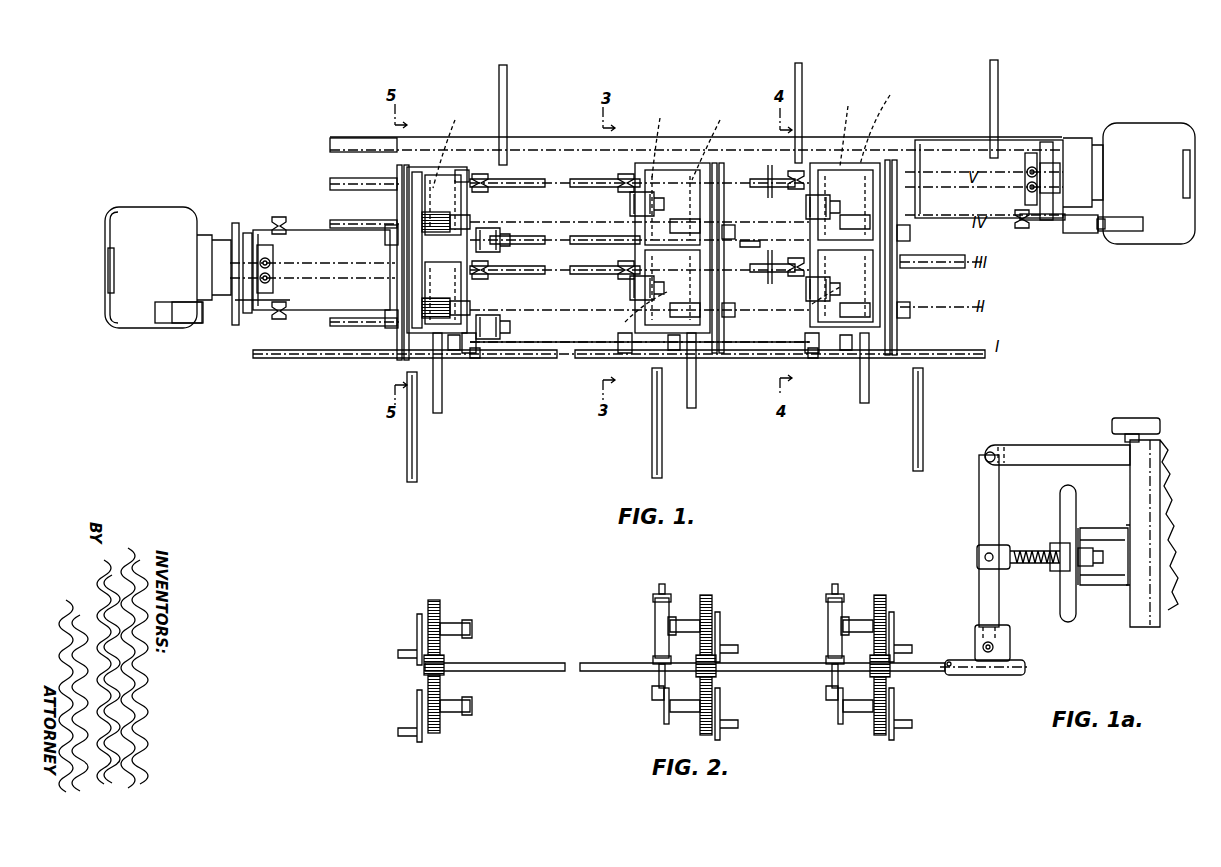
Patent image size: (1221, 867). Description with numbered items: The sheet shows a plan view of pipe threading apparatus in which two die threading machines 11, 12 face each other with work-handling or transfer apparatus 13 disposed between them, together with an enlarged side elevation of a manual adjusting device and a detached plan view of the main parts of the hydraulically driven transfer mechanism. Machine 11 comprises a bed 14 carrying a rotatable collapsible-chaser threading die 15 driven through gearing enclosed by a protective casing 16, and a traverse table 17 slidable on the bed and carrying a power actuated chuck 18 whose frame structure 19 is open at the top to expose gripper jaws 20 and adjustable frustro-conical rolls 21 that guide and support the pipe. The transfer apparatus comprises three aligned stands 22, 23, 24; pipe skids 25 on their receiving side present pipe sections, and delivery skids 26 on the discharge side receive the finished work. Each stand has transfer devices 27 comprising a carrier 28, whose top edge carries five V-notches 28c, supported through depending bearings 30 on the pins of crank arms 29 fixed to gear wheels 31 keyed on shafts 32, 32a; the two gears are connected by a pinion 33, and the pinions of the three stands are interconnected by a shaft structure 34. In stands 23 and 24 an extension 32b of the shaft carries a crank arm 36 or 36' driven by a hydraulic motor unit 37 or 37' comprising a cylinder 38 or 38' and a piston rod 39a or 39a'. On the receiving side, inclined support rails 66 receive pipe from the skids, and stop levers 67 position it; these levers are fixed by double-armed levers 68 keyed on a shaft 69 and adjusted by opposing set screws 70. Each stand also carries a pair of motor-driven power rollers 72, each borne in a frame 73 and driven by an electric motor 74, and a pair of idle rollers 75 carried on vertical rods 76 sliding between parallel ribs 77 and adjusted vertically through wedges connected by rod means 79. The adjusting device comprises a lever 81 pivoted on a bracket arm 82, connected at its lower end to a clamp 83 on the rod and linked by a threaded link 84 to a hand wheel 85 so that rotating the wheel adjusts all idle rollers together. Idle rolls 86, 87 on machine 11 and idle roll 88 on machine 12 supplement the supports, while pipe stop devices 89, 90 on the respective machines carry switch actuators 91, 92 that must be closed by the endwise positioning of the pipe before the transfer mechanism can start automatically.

In FIG. 1, the die threading machine 11 is at (240, 207).
In FIG. 1, the die threading machine 12 is at (1078, 118).
In FIG. 1, the work-handling or transfer apparatus 13 is at (710, 116).
In FIG. 1, the bed or frame 14 is at (308, 230).
In FIG. 1, the threading die 15 is at (215, 225).
In FIG. 1, the protective casing 16 is at (126, 210).
In FIG. 1, the traverse table 17 is at (266, 243).
In FIG. 1, the power actuated chuck 18 is at (247, 231).
In FIG. 1, the frame structure 19 is at (244, 318).
In FIG. 1, the gripper jaws 20 is at (236, 238).
In FIG. 1, the frustro-conical rolls 21 is at (272, 260).
In FIG. 1, the stand 22 is at (436, 165).
In FIG. 1, the stand 23 is at (676, 165).
In FIG. 1, the stand 24 is at (860, 165).
In FIG. 1, the pipe skids 25 is at (406, 470).
In FIG. 1, the delivery skids 26 is at (507, 74).
In FIG. 1, the transfer devices 27 is at (398, 168).
In FIG. 1, the lifting structure or carrier 28 is at (405, 346).
In FIG. 1, the V-notches 28c is at (815, 364).
In FIG. 1, the crank arms 29 is at (398, 209).
In FIG. 2, the crank arms 29 is at (416, 640).
In FIG. 1, the depending bearings 30 is at (384, 244).
In FIG. 1, the gear wheels 31 is at (452, 294).
In FIG. 2, the gear wheels 31 is at (434, 600).
In FIG. 2, the shaft 32 is at (456, 712).
In FIG. 2, the shaft 32a is at (454, 622).
In FIG. 2, the extension 32b is at (838, 696).
In FIG. 2, the pinion 33 is at (448, 659).
In FIG. 1, the shaft structure 34 is at (574, 232).
In FIG. 2, the shaft structure 34 is at (590, 664).
In FIG. 1, the crank arm 36 is at (628, 314).
In FIG. 2, the crank arm 36 is at (642, 707).
In FIG. 1, the crank arm 36' is at (814, 300).
In FIG. 2, the crank arm 36' is at (819, 713).
In FIG. 1, the hydraulic motor unit 37 is at (658, 140).
In FIG. 2, the hydraulic motor unit 37 is at (622, 586).
In FIG. 1, the hydraulic motor unit 37' is at (847, 128).
In FIG. 2, the hydraulic motor unit 37' is at (810, 584).
In FIG. 2, the cylinder 38 is at (640, 624).
In FIG. 2, the cylinder 38' is at (812, 624).
In FIG. 2, the piston rod 39a is at (634, 675).
In FIG. 2, the piston rod 39a' is at (812, 675).
In FIG. 1, the support rails 66 is at (438, 390).
In FIG. 1, the stop levers 67 is at (476, 353).
In FIG. 1, the double-armed levers 68 is at (454, 352).
In FIG. 1, the shaft 69 is at (560, 358).
In FIG. 1, the set screws 70 is at (474, 358).
In FIG. 1, the power rollers 72 is at (474, 217).
In FIG. 1, the frame 73 is at (458, 218).
In FIG. 1, the electric motor 74 is at (484, 240).
In FIG. 1, the idle rollers 75 is at (478, 171).
In FIG. 1a, the vertical rod 76 is at (1125, 432).
In FIG. 1, the parallel ribs 77 is at (464, 170).
In FIG. 1a, the parallel ribs 77 is at (1160, 504).
In FIG. 1, the rod means 79 is at (534, 180).
In FIG. 1a, the rod means 79 is at (964, 676).
In FIG. 1a, the lever 81 is at (981, 523).
In FIG. 1, the bracket arm 82 is at (760, 178).
In FIG. 1a, the bracket arm 82 is at (1026, 447).
In FIG. 1a, the clamp 83 is at (1010, 646).
In FIG. 1a, the threaded link 84 is at (1024, 548).
In FIG. 1, the hand wheel 85 is at (768, 182).
In FIG. 1a, the hand wheel 85 is at (1074, 504).
In FIG. 1, the idle roll 86 is at (284, 314).
In FIG. 1, the idle roll 87 is at (282, 214).
In FIG. 1, the idle roll 88 is at (1020, 226).
In FIG. 1, the pipe stop device 89 is at (188, 320).
In FIG. 1, the stop 90 is at (1088, 228).
In FIG. 1, the actuator 91 is at (204, 320).
In FIG. 1, the actuator 92 is at (1060, 232).